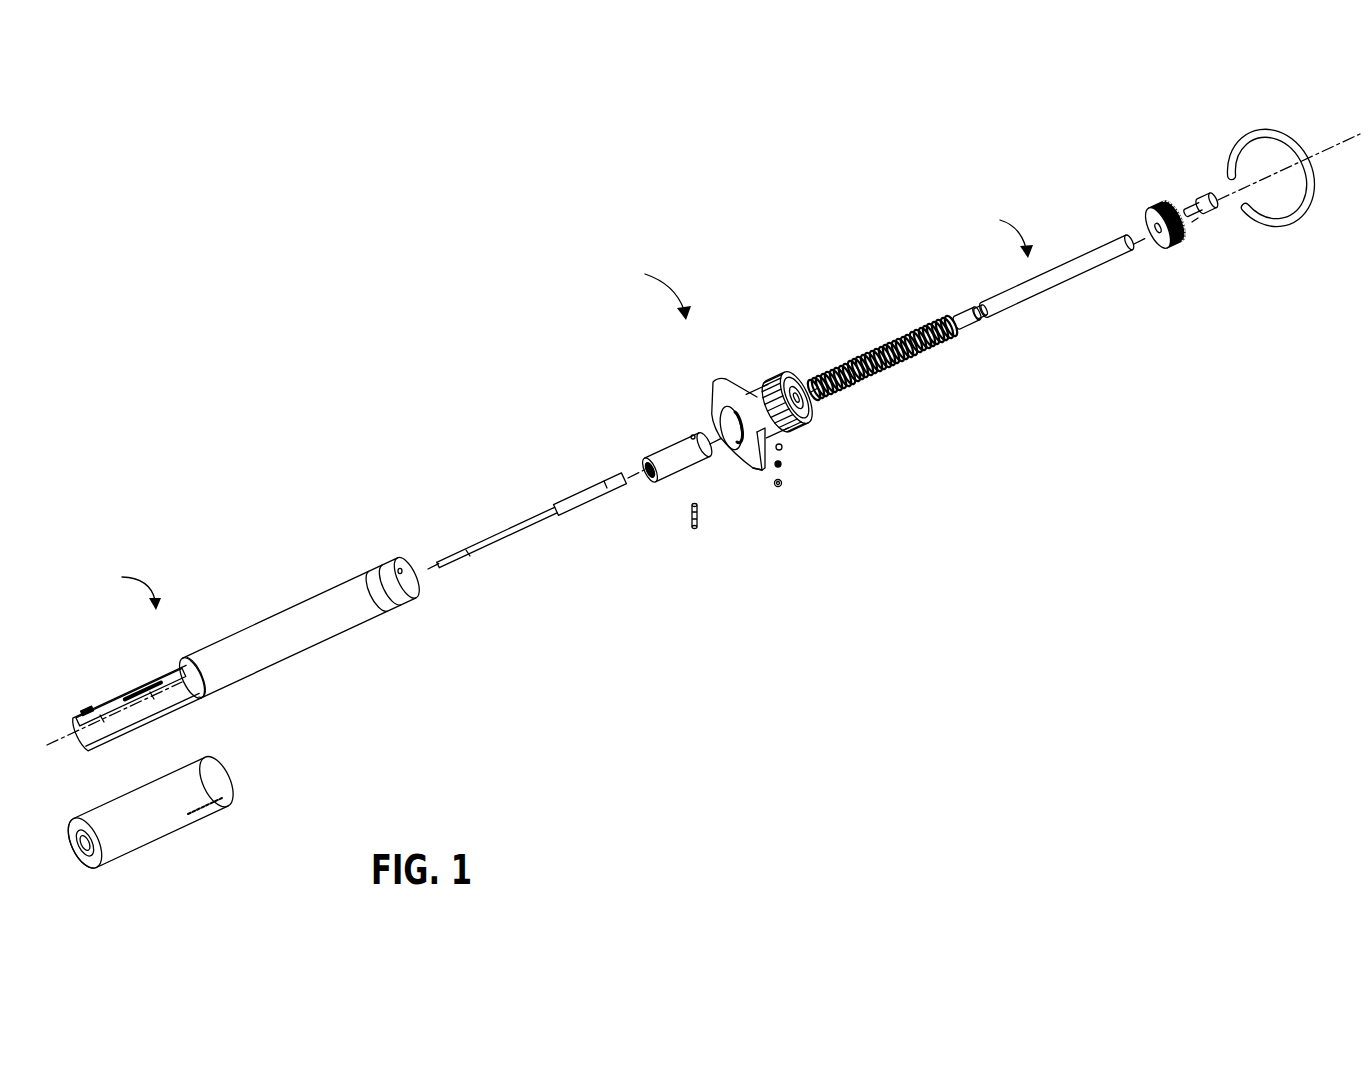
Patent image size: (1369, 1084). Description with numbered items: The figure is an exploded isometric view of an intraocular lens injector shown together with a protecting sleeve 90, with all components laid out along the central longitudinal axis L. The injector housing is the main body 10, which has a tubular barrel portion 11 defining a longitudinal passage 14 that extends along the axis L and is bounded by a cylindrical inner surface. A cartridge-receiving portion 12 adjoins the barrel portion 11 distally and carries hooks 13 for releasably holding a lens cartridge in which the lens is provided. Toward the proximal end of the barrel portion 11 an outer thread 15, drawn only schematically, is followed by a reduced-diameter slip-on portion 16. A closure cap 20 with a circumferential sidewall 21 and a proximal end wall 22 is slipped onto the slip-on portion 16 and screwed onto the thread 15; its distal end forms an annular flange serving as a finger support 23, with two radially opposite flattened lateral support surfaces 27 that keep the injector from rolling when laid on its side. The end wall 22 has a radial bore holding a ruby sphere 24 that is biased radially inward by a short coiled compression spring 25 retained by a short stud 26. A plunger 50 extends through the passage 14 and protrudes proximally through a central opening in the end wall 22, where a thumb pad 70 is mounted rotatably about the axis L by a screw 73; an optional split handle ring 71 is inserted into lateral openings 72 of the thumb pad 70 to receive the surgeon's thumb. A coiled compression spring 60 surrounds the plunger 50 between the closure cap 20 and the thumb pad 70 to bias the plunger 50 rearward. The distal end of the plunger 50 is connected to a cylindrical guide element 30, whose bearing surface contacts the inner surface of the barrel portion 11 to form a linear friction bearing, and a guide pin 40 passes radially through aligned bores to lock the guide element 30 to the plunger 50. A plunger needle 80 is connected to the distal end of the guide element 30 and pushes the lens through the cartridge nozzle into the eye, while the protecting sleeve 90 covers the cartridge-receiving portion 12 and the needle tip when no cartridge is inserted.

The central longitudinal axis L is at (46, 745).
The injector main body 10 is at (124, 583).
The tubular barrel portion 11 is at (282, 645).
The cartridge-receiving portion 12 is at (170, 711).
The hooks 13 is at (87, 707).
The longitudinal passage 14 is at (158, 684).
The outer thread 15 is at (390, 598).
The slip-on portion 16 is at (410, 585).
The closure cap 20 is at (648, 287).
The circumferential sidewall 21 is at (757, 402).
The proximal end wall 22 is at (790, 368).
The finger support 23 is at (727, 396).
The ruby sphere 24 is at (784, 447).
The coiled compression spring 25 is at (784, 465).
The stud 26 is at (784, 485).
The lateral support surfaces 27 is at (748, 478).
The guide element 30 is at (683, 451).
The guide pin 40 is at (699, 517).
The plunger 50 is at (1044, 259).
The coiled compression spring 60 is at (847, 386).
The thumb pad 70 is at (1150, 210).
The split handle ring 71 is at (1260, 150).
The lateral openings 72 is at (1164, 204).
The screw 73 is at (1204, 214).
The plunger needle 80 is at (587, 490).
The protecting sleeve 90 is at (143, 830).